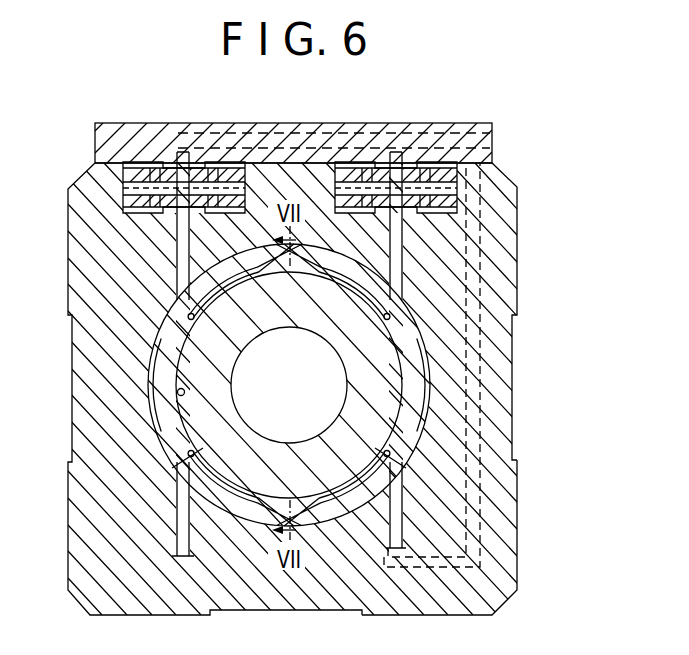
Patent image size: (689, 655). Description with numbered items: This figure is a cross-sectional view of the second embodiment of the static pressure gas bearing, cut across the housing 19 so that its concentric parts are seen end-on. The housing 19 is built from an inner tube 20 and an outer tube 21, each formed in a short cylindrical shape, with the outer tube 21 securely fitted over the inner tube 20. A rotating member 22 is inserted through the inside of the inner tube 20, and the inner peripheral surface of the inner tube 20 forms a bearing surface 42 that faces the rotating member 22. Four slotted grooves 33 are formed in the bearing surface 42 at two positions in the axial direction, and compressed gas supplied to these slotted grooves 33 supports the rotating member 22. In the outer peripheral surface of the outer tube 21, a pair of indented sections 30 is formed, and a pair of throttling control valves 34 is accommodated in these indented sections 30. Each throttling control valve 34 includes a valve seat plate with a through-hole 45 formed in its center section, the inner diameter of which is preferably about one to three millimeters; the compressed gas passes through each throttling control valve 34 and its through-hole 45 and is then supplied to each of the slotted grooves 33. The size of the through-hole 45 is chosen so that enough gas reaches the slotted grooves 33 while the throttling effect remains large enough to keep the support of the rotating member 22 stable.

The housing 19 is at (507, 357).
The inner tube 20 is at (422, 437).
The outer tube 21 is at (507, 498).
The rotating member 22 is at (397, 398).
The indented section 30 is at (138, 166).
The slotted groove 33 is at (393, 325).
The throttling control valve 34 is at (233, 172).
The bearing surface 42 is at (180, 397).
The through-hole 45 is at (182, 152).